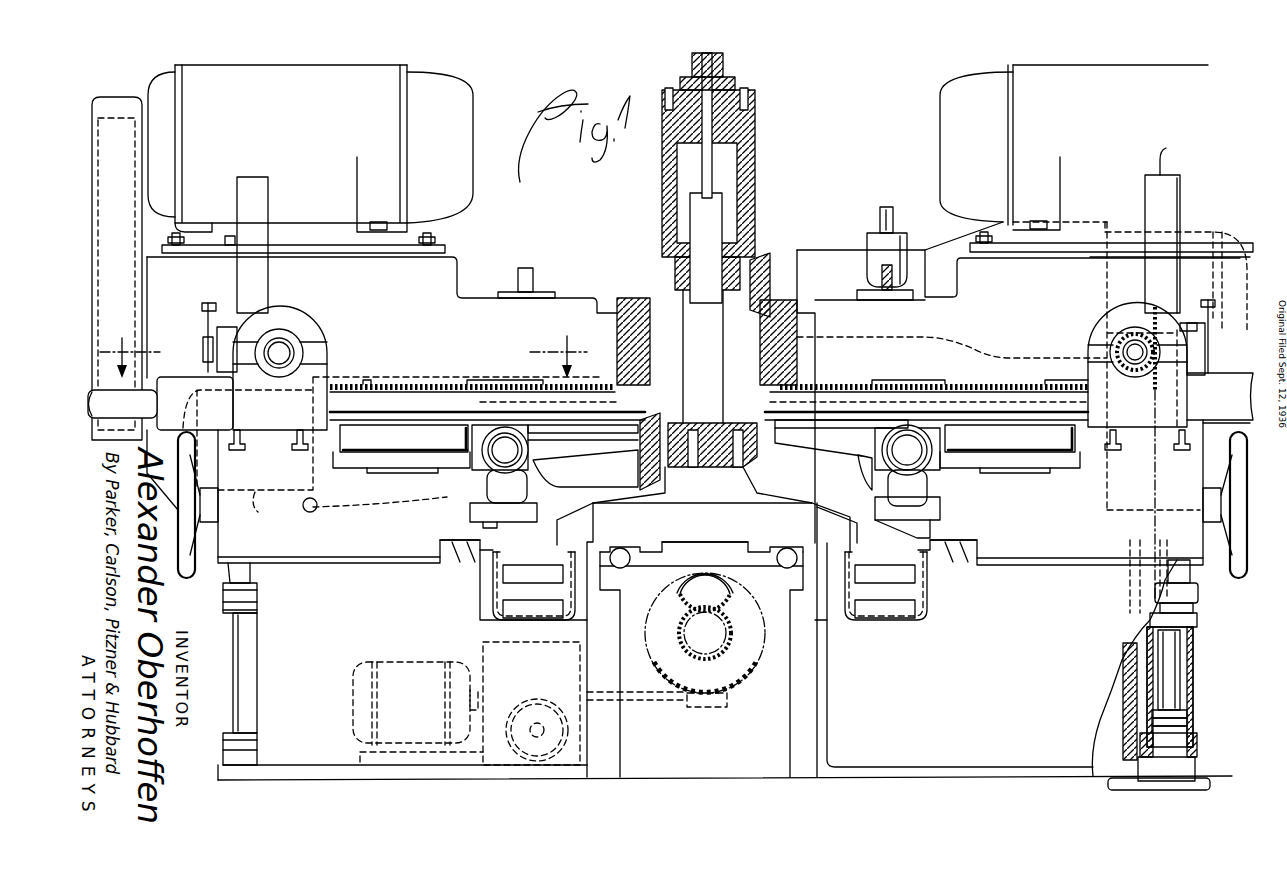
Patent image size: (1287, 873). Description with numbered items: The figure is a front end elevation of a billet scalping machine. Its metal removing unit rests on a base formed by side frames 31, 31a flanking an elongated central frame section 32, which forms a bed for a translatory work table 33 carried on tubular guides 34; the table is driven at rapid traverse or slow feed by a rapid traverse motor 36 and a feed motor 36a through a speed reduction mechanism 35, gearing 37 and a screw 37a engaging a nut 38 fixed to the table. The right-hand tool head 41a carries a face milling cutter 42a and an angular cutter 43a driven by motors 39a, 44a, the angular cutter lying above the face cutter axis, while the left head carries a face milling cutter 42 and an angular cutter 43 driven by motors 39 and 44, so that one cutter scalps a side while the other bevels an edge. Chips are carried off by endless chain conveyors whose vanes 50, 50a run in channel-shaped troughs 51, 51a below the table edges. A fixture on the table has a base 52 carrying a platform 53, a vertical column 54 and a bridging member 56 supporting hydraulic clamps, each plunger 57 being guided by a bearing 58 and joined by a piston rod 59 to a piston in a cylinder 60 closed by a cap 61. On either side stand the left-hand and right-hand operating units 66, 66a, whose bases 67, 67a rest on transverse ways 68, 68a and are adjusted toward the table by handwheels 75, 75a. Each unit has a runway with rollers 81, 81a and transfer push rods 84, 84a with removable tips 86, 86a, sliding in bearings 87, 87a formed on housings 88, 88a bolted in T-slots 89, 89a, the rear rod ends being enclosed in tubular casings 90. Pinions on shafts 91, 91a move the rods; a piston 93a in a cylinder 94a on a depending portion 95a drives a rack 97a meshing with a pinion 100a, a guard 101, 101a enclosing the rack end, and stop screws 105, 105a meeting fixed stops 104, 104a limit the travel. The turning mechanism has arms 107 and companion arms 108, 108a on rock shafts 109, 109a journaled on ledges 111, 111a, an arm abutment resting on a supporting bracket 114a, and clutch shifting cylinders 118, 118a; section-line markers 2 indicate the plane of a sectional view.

The section line 2- 2 is at (343, 346).
The side frame 31 is at (265, 634).
The side frame 31a is at (978, 760).
The central frame section 32 is at (705, 770).
The work table 33 is at (738, 503).
The tubular guides 34 is at (625, 549).
The speed reduction mechanism 35 is at (483, 650).
The rapid traverse motor 36 is at (392, 662).
The feed motor 36a is at (548, 702).
The gearing 37 is at (744, 673).
The screw 37a is at (676, 576).
The nut 38 is at (697, 542).
The motor 39 is at (395, 87).
The motor 39a is at (1012, 82).
The multiple spindle tool head 41a is at (838, 256).
The face milling cutter 42 is at (650, 302).
The face milling cutter 42a is at (770, 376).
The angular milling cutter 43 is at (651, 428).
The angular milling cutter 43a is at (765, 257).
The motor 44 is at (285, 508).
The motor 44a is at (1210, 230).
The vanes 50 is at (540, 567).
The vanes 50a is at (885, 570).
The trough 51 is at (491, 604).
The trough 51a is at (931, 606).
The fixture base 52 is at (816, 495).
The platform 53 is at (713, 425).
The vertical column 54 is at (683, 358).
The bridging member 56 is at (748, 171).
The plunger 57 is at (690, 200).
The bearing 58 is at (676, 268).
The piston rod 59 is at (702, 158).
The cylinder 60 is at (726, 72).
The cap 61 is at (748, 108).
The left-hand unit 66 is at (458, 388).
The right-hand unit 66a is at (966, 381).
The base 67 is at (356, 548).
The base 67a is at (1066, 548).
The transverse ways 68 is at (455, 546).
The transverse ways 68a is at (967, 546).
The handwheel 75 is at (192, 572).
The handwheel 75a is at (1235, 582).
The rollers 81 is at (400, 458).
The rollers 81a is at (1030, 452).
The push rods 84 is at (400, 400).
The push rods 84a is at (845, 386).
The removable tip 86 is at (646, 406).
The removable tip 86a is at (768, 398).
The bearing 87 is at (188, 382).
The bearing 87a is at (1246, 402).
The housing 88 is at (313, 337).
The housing 88a is at (1102, 324).
The T-slots 89 is at (300, 432).
The T-slots 89a is at (1113, 450).
The tubular casings 90 is at (122, 423).
The shaft 91 is at (281, 345).
The shaft 91a is at (1131, 335).
The piston 93a is at (1193, 724).
The cylinder 94a is at (1193, 648).
The depending portion 95a is at (1123, 700).
The rack 97a is at (1125, 453).
The pinion 100a is at (1122, 363).
The tubular guard 101 is at (268, 198).
The tubular guard 101a is at (1145, 189).
The fixed stop 104 is at (204, 356).
The fixed stop 104a is at (1215, 358).
The stop screw 105 is at (206, 313).
The stop screw 105a is at (1213, 345).
The turning arms 107 is at (466, 437).
The companion arms 108 is at (607, 440).
The companion arms 108a is at (800, 443).
The rock shaft 109 is at (522, 449).
The rock shaft 109a is at (890, 448).
The ledge 111 is at (514, 512).
The ledge 111a is at (941, 511).
The supporting bracket 114a is at (870, 480).
The cylinder 118 is at (490, 488).
The cylinder 118a is at (927, 482).